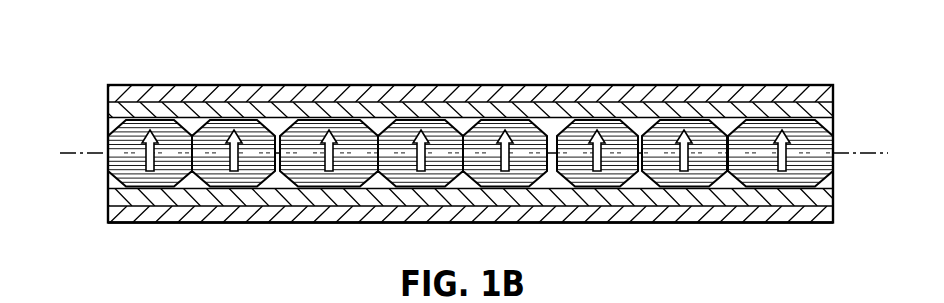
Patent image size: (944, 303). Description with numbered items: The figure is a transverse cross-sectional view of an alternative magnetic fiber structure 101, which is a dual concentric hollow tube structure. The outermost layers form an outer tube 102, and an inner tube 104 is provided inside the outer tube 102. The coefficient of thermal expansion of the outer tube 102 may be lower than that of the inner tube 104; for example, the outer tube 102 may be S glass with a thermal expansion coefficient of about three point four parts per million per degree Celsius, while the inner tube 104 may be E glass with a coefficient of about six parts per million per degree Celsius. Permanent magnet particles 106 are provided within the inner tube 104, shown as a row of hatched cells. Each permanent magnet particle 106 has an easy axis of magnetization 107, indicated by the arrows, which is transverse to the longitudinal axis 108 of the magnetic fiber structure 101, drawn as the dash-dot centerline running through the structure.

The magnetic fiber structure 101 is at (712, 75).
The outer tube 102 is at (217, 212).
The inner tube 104 is at (335, 196).
The permanent magnet particles 106 is at (168, 139).
The easy axis of magnetization 107 is at (247, 138).
The longitudinal axis 108 is at (85, 153).